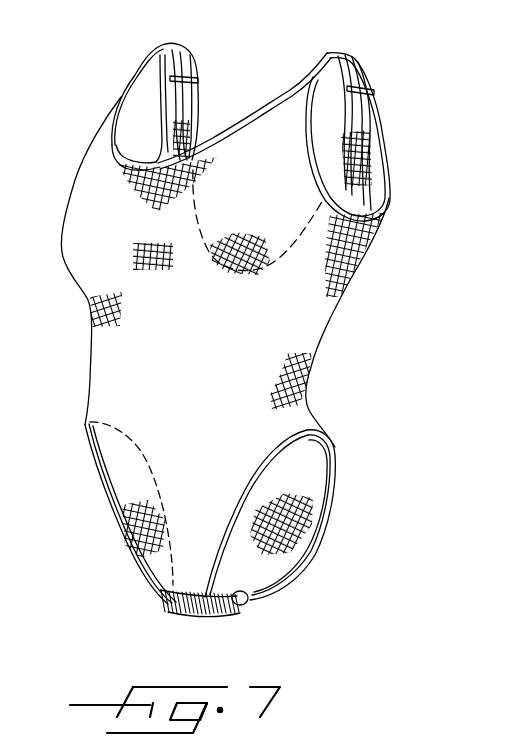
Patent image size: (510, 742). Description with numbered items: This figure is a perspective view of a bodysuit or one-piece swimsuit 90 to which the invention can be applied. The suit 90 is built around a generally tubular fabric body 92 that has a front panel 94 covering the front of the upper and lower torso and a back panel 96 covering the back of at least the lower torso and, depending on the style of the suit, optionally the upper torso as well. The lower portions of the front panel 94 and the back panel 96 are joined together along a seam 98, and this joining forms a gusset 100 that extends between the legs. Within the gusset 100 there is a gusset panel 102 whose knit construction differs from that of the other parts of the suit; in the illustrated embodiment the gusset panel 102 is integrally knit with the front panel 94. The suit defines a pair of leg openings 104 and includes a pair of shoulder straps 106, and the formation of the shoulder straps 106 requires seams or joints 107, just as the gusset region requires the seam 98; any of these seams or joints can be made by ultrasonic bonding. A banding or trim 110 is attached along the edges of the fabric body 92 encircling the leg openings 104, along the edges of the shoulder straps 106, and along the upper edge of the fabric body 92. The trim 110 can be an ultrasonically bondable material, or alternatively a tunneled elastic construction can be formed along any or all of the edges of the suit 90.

The bodysuit or swimsuit 90 is at (392, 309).
The fabric body 92 is at (181, 453).
The front panel 94 is at (215, 373).
The back panel 96 is at (293, 518).
The seam 98 is at (243, 600).
The gusset 100 is at (155, 612).
The gusset panel 102 is at (187, 613).
The leg openings 104 is at (322, 456).
The shoulder straps 106 is at (134, 84).
The seams or joints 107 is at (182, 72).
The banding or trim 110 is at (256, 106).